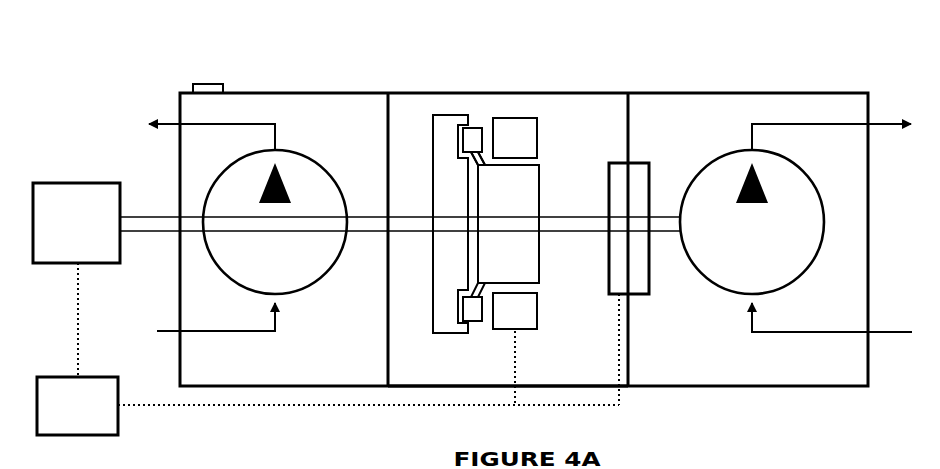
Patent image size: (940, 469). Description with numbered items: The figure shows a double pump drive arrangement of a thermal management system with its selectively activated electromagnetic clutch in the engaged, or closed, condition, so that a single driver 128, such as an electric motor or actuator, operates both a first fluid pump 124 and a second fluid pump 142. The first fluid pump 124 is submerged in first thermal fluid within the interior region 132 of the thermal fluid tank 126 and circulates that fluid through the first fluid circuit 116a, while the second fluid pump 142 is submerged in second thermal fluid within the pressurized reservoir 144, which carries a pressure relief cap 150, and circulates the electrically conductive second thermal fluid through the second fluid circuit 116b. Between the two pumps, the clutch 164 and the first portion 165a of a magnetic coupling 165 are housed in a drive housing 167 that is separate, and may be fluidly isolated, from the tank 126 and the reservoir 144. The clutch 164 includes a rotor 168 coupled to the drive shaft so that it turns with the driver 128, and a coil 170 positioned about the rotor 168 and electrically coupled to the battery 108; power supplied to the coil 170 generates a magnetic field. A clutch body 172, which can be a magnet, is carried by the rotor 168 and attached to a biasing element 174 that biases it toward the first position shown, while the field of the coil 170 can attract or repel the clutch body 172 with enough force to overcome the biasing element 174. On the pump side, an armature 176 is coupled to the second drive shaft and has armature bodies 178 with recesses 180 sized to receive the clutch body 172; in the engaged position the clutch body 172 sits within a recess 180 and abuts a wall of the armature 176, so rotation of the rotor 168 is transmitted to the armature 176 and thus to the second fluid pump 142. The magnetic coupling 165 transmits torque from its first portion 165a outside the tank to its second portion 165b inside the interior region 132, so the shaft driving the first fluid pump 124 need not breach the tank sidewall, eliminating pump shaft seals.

The battery 108 is at (96, 415).
The first fluid circuit 116a is at (828, 123).
The second fluid circuit 116b is at (172, 122).
The first fluid pump 124 is at (766, 245).
The thermal fluid tank 126 is at (826, 370).
The driver 128 is at (97, 235).
The interior region 132 is at (722, 117).
The second fluid pump 142 is at (296, 265).
The pressurized reservoir 144 is at (263, 372).
The pressure relief cap 150 is at (213, 83).
The clutch 164 is at (443, 100).
The magnetic coupling 165 is at (674, 284).
The first portion of the magnetic coupling 165a is at (617, 163).
The second portion of the magnetic coupling 165b is at (638, 294).
The drive housing 167 is at (595, 368).
The rotor 168 is at (537, 200).
The coil 170 is at (521, 312).
The clutch body 172 is at (478, 127).
The biasing element 174 is at (483, 155).
The armature 176 is at (452, 334).
The armature body 178 is at (455, 142).
The recess 180 is at (455, 142).